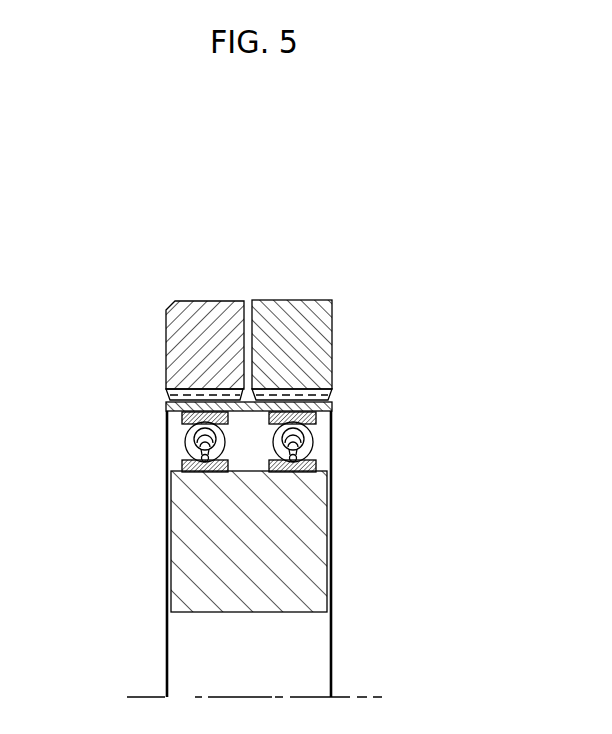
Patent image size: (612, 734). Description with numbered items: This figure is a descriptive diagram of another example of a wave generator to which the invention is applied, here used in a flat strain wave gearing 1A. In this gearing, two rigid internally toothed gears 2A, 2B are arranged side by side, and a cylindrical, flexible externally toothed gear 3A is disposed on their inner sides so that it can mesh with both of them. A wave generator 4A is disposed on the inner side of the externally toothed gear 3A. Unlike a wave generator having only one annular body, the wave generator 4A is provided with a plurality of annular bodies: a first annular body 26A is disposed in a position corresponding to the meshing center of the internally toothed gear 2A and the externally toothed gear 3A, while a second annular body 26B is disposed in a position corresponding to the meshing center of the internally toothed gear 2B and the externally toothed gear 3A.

The flat strain wave gearing 1A is at (433, 340).
The internally toothed gear 2B is at (165, 345).
The internally toothed gear 2A is at (332, 344).
The externally toothed gear 3A is at (158, 400).
The second annular body 26B is at (185, 442).
The first annular body 26A is at (314, 442).
The wave generator 4A is at (145, 530).